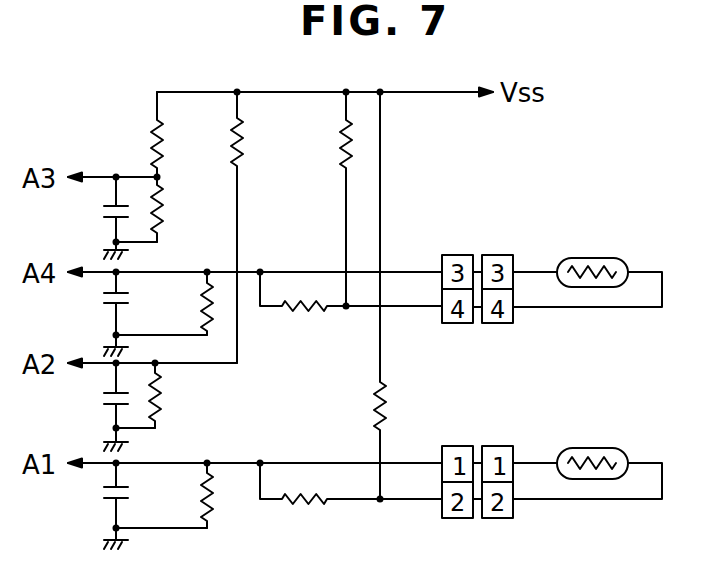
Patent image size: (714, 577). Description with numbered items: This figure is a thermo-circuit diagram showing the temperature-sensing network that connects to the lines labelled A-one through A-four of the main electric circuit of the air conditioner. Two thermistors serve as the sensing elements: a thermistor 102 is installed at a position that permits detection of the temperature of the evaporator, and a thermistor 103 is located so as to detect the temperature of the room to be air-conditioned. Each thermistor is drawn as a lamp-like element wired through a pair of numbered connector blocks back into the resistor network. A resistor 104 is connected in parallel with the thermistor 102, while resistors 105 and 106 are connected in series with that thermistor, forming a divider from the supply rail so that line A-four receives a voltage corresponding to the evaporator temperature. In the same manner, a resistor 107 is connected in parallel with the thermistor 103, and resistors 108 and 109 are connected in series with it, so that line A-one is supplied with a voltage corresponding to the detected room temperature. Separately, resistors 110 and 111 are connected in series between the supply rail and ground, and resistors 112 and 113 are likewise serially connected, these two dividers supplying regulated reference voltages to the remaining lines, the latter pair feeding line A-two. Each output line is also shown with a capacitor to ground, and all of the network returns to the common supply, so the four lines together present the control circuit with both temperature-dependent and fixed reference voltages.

The thermistor 102 is at (591, 257).
The thermistor 103 is at (587, 448).
The resistor 104 is at (301, 312).
The resistor 105 is at (342, 138).
The resistor 106 is at (204, 312).
The resistor 107 is at (304, 504).
The resistor 108 is at (384, 397).
The resistor 109 is at (210, 506).
The resistor 110 is at (152, 140).
The resistor 111 is at (160, 215).
The resistor 112 is at (240, 152).
The resistor 113 is at (160, 395).